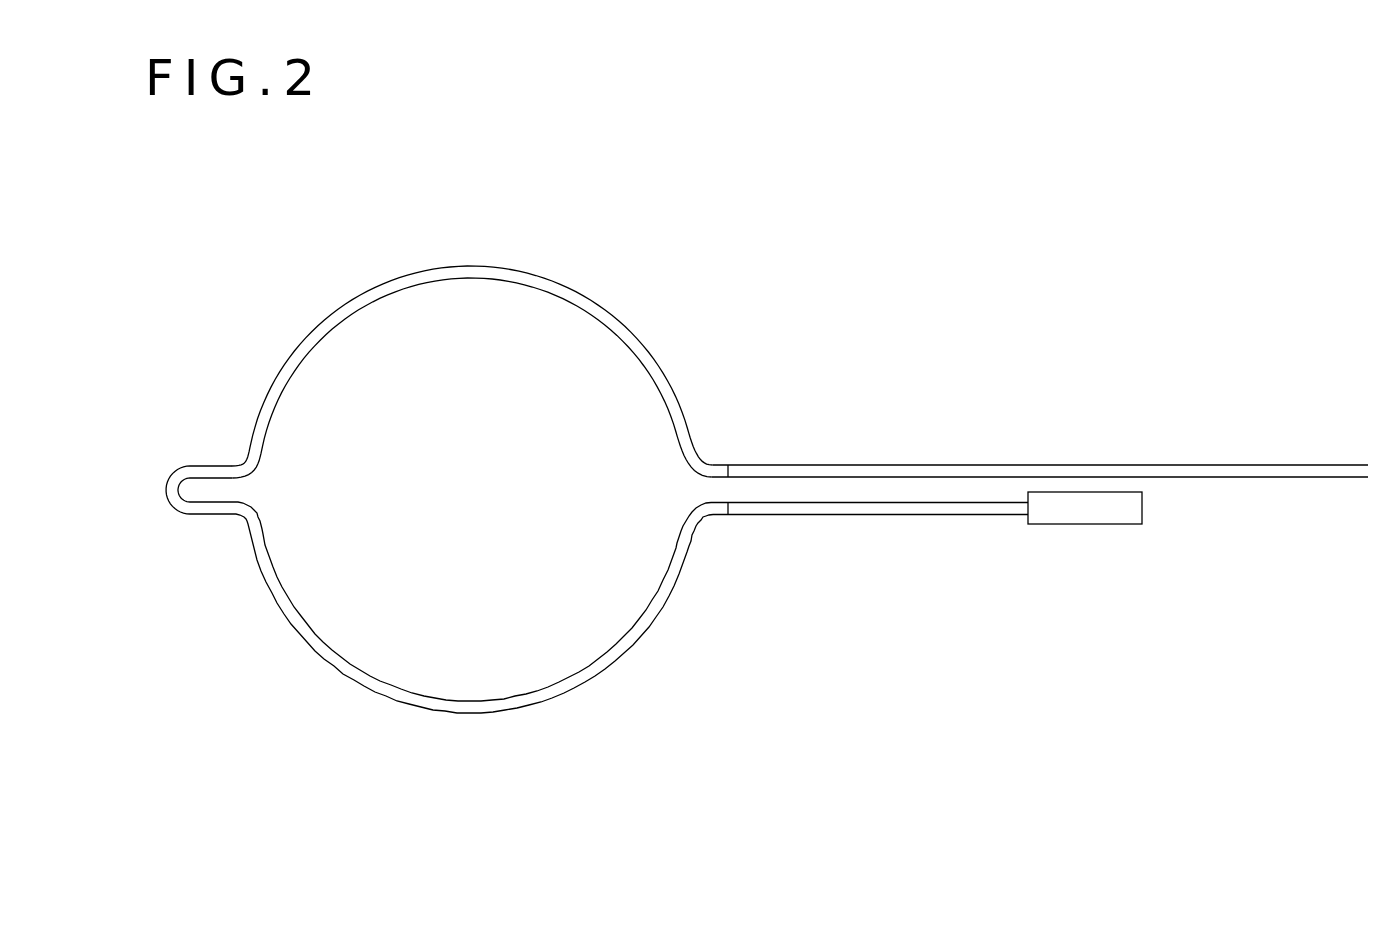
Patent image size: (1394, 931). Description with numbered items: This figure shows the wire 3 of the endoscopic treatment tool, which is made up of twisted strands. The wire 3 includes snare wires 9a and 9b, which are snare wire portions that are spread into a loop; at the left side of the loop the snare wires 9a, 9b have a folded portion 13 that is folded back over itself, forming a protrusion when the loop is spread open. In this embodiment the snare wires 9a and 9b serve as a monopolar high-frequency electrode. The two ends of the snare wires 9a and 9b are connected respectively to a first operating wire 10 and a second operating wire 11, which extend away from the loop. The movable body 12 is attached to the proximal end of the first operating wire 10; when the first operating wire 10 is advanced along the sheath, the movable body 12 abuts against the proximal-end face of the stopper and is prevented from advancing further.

The wire 3 is at (259, 224).
The snare wire 9a is at (468, 713).
The snare wire 9b is at (470, 266).
The first operating wire 10 is at (875, 515).
The second operating wire 11 is at (930, 465).
The movable body 12 is at (1078, 524).
The folded portion 13 is at (166, 490).